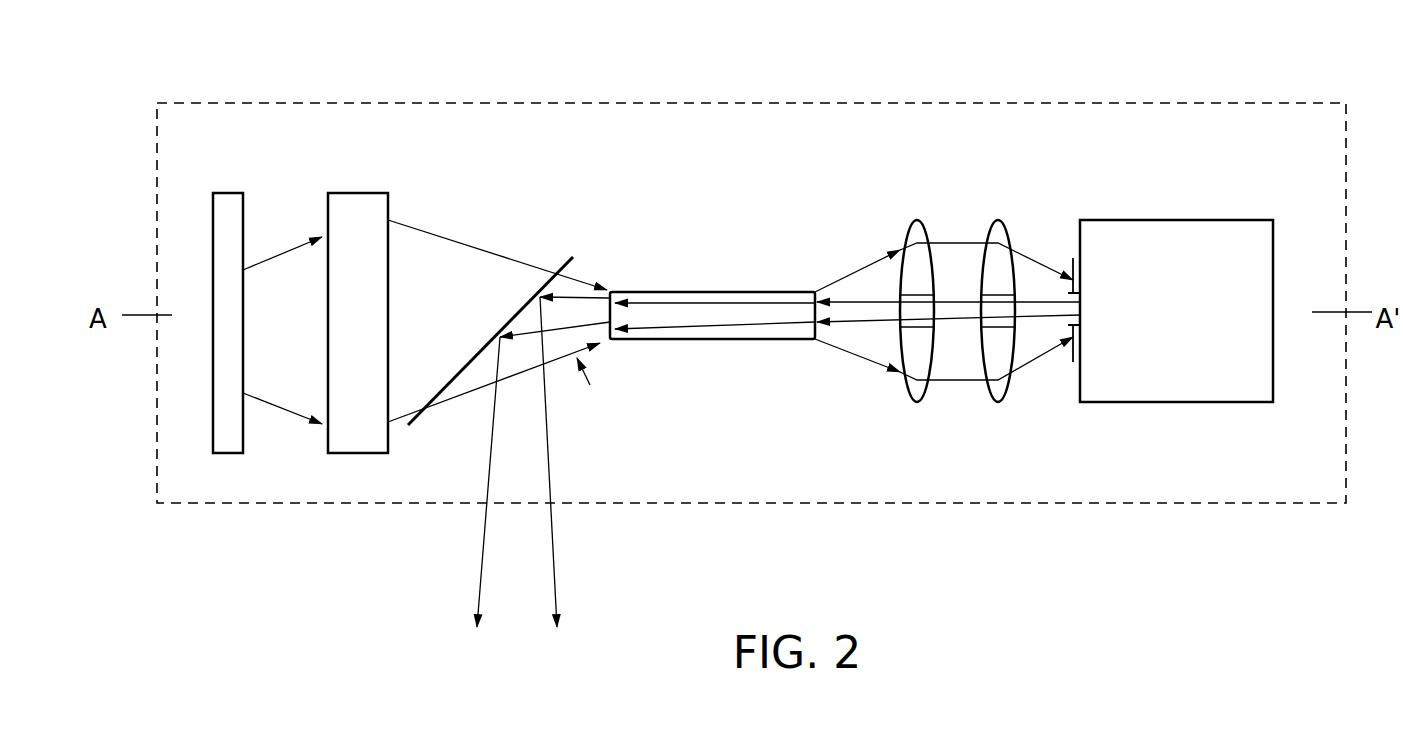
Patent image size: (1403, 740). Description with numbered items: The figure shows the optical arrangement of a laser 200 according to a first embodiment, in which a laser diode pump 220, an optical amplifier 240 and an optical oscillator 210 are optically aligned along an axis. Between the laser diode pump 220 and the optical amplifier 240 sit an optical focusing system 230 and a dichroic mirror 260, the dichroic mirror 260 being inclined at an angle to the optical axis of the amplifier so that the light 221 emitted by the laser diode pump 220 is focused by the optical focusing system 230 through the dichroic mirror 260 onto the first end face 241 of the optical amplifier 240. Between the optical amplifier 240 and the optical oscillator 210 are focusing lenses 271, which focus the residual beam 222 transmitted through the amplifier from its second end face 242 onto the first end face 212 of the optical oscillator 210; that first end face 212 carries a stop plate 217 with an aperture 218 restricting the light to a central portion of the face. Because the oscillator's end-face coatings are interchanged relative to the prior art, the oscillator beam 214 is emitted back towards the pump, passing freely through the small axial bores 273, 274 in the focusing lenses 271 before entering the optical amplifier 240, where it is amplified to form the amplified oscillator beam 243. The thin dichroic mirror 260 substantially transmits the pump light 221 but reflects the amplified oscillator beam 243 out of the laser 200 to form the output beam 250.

The laser 200 is at (560, 102).
The optical oscillator 210 is at (1173, 240).
The first end face of the optical oscillator 212 is at (1113, 403).
The oscillator beam 214 is at (850, 323).
The stop plate 217 is at (1073, 267).
The aperture 218 is at (1075, 330).
The laser diode pump 220 is at (228, 202).
The light emitted by the laser pump 221 is at (463, 287).
The residual beam 222 is at (870, 275).
The optical focusing system 230 is at (358, 202).
The optical amplifier 240 is at (718, 297).
The first end face of the optical amplifier 241 is at (610, 322).
The second end face of the optical amplifier 242 is at (817, 295).
The amplified oscillator beam 243 is at (555, 335).
The output beam 250 is at (557, 600).
The dichroic mirror 260 is at (457, 377).
The focusing lens 271 is at (923, 223).
The axial bore 273 is at (915, 330).
The axial bore 274 is at (985, 330).